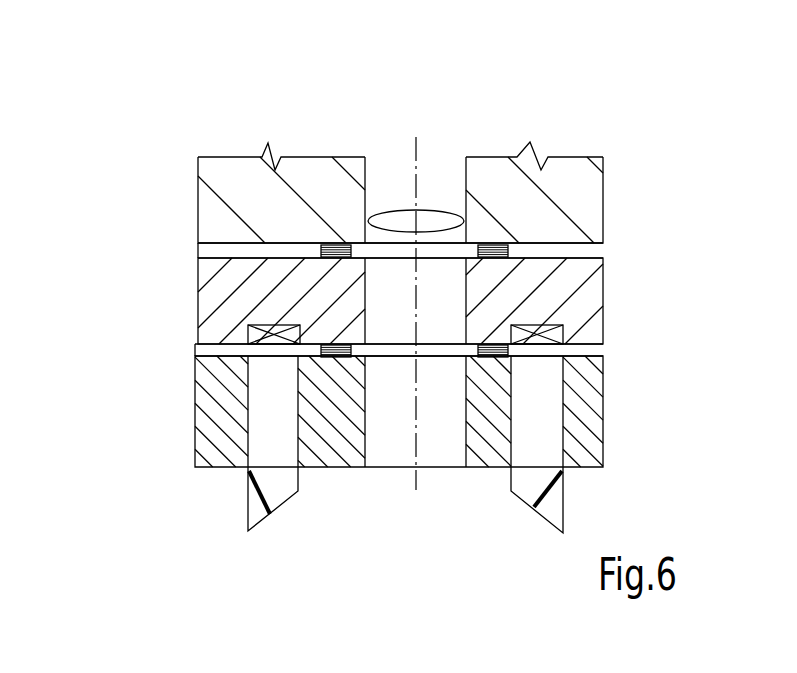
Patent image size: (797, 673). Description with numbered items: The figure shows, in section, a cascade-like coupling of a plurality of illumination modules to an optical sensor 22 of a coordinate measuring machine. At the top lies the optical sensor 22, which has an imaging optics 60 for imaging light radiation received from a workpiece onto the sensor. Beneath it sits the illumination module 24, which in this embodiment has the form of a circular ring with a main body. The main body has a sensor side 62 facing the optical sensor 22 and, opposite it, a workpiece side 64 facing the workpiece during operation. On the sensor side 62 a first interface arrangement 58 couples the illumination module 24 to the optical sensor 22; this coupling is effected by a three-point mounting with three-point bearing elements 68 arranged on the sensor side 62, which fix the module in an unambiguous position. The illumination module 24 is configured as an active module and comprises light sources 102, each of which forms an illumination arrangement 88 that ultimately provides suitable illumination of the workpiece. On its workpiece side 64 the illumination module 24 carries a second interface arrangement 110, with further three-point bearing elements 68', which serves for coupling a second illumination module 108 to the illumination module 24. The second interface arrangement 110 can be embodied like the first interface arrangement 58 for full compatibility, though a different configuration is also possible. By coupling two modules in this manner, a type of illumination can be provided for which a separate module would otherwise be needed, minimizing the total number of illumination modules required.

The optical sensor 22 is at (563, 168).
The illumination module 24 is at (586, 302).
The first interface device 58 is at (593, 250).
The imaging optics 60 is at (428, 222).
The sensor side 62 is at (203, 258).
The workpiece side 64 is at (200, 358).
The three-point bearing elements 68 is at (375, 154).
The three-point bearing elements 68' is at (270, 285).
The illumination arrangement 88 is at (557, 543).
The light source 102 is at (250, 330).
The second illumination module 108 is at (586, 414).
The second interface arrangement 110 is at (593, 350).